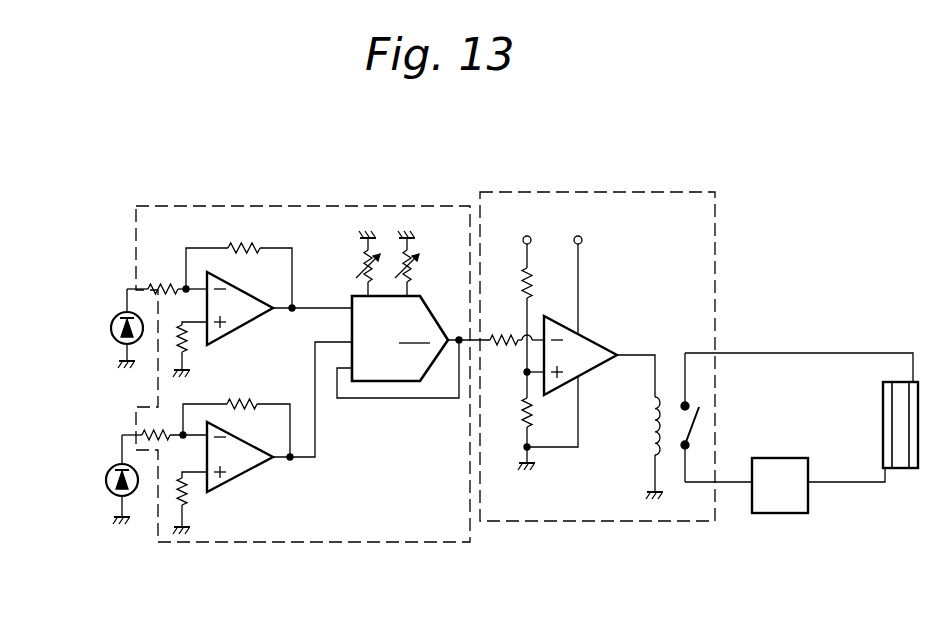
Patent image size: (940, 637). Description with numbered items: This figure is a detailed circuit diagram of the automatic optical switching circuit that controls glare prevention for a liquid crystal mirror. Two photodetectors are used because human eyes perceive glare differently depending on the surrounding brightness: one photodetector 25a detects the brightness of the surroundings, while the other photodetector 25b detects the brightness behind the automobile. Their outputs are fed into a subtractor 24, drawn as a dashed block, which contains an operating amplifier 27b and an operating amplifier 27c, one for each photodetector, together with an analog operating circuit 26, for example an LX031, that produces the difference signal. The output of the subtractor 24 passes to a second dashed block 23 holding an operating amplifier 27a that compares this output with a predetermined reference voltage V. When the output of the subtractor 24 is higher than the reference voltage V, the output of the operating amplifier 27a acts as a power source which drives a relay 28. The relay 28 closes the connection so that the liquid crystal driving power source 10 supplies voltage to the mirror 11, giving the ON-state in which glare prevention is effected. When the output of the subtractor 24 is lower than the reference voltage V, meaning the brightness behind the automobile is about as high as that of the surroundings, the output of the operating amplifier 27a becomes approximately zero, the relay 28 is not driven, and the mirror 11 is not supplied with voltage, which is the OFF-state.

The liquid crystal driving power source 10 is at (785, 514).
The mirror 11 is at (907, 470).
The comparator circuit 23 is at (597, 522).
The subtractor 24 is at (380, 543).
The photodetector 25a is at (112, 471).
The photodetector 25b is at (116, 318).
The analog operating circuit 26 is at (422, 300).
The operating amplifier 27a is at (603, 341).
The operating amplifier 27b is at (240, 333).
The operating amplifier 27c is at (242, 480).
The relay 28 is at (650, 437).